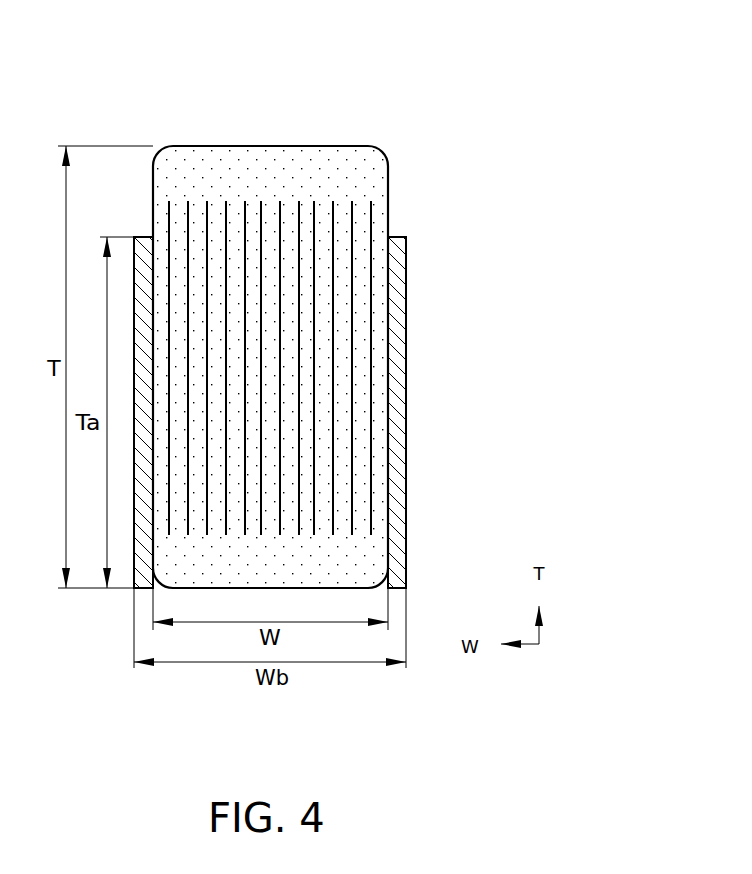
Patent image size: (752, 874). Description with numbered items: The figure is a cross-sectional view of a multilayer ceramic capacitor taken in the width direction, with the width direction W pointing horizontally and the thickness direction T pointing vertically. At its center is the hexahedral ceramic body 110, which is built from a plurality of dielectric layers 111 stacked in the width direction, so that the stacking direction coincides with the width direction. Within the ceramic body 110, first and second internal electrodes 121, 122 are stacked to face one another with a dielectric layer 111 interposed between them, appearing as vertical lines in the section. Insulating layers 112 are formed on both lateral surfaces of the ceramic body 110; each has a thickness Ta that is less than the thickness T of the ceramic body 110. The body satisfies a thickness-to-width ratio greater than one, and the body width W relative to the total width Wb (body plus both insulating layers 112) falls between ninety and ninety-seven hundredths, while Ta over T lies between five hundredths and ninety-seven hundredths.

The ceramic body 110 is at (263, 108).
The dielectric layer 111 is at (182, 167).
The insulating layer 112 is at (397, 382).
The first internal electrode 121 is at (373, 272).
The second internal electrode 122 is at (353, 316).